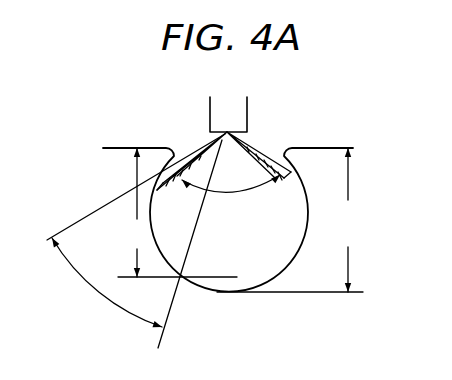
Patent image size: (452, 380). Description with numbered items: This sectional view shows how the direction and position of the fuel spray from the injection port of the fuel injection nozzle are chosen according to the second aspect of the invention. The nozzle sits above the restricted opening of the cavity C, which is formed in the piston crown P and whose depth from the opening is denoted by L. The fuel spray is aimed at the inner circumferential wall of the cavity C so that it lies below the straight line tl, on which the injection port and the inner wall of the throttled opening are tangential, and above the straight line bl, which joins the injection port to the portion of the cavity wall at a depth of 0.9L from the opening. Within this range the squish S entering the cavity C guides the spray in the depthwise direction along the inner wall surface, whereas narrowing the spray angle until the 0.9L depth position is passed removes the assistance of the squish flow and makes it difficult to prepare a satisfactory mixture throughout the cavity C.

The squish S is at (181, 154).
The plate P is at (320, 163).
The cavity C is at (219, 292).
The straight line tl is at (86, 213).
The straight line bl is at (173, 300).
The depth of the cavity L is at (346, 220).
The 0.9L depth position 0.9L is at (171, 212).